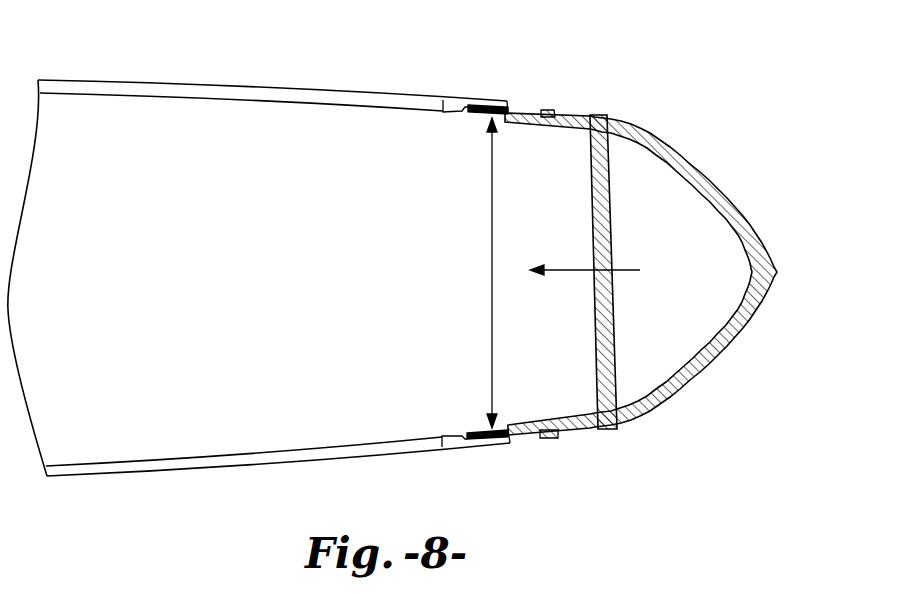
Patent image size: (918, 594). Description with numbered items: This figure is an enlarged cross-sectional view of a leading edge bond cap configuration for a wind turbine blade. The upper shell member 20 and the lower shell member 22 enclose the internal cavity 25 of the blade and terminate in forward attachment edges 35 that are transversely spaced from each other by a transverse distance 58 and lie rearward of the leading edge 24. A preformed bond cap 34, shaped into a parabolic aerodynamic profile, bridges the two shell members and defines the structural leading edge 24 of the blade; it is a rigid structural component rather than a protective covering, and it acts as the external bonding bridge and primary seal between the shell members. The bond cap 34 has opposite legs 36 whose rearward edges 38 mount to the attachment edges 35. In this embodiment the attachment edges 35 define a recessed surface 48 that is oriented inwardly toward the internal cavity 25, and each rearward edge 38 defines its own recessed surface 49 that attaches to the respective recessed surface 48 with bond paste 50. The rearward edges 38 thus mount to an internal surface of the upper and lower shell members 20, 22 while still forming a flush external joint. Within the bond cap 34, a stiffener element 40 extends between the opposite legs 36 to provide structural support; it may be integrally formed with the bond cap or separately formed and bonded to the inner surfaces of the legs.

The upper shell member 20 is at (297, 88).
The lower shell member 22 is at (256, 465).
The leading edge 24 is at (795, 262).
The internal cavity 25 is at (326, 270).
The bond cap 34 is at (752, 190).
The forward attachment edges 35 is at (508, 113).
The legs 36 is at (598, 116).
The rearward edges 38 is at (510, 123).
The stiffener element 40 is at (610, 240).
The recessed surface 48 is at (498, 106).
The recessed surface 49 is at (522, 112).
The bond paste 50 is at (488, 120).
The transverse distance 58 is at (491, 290).